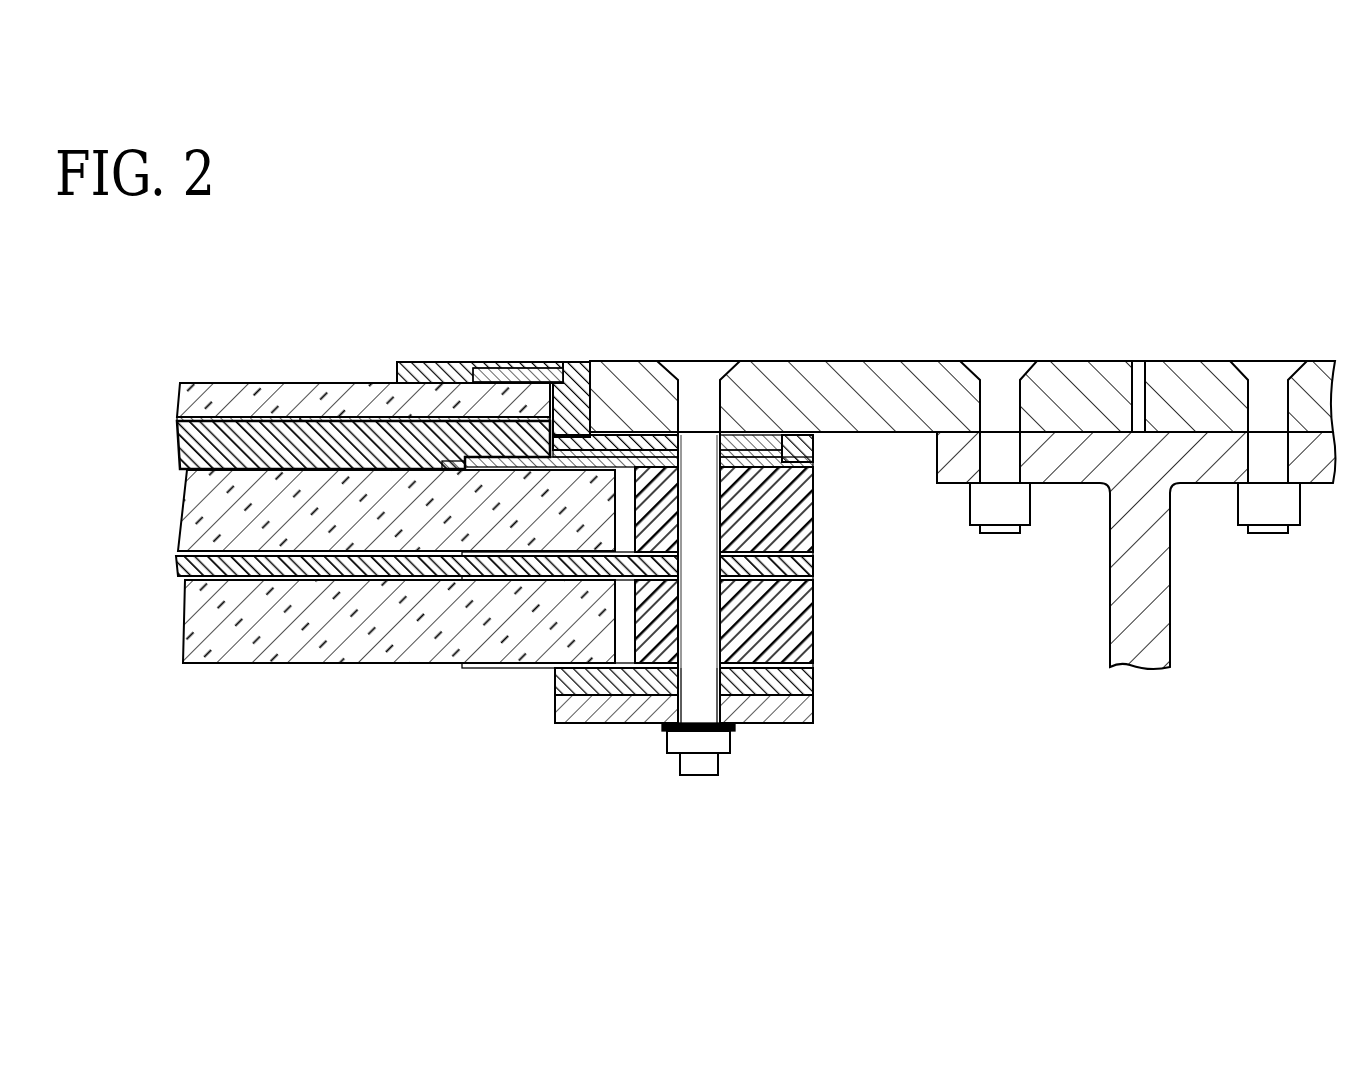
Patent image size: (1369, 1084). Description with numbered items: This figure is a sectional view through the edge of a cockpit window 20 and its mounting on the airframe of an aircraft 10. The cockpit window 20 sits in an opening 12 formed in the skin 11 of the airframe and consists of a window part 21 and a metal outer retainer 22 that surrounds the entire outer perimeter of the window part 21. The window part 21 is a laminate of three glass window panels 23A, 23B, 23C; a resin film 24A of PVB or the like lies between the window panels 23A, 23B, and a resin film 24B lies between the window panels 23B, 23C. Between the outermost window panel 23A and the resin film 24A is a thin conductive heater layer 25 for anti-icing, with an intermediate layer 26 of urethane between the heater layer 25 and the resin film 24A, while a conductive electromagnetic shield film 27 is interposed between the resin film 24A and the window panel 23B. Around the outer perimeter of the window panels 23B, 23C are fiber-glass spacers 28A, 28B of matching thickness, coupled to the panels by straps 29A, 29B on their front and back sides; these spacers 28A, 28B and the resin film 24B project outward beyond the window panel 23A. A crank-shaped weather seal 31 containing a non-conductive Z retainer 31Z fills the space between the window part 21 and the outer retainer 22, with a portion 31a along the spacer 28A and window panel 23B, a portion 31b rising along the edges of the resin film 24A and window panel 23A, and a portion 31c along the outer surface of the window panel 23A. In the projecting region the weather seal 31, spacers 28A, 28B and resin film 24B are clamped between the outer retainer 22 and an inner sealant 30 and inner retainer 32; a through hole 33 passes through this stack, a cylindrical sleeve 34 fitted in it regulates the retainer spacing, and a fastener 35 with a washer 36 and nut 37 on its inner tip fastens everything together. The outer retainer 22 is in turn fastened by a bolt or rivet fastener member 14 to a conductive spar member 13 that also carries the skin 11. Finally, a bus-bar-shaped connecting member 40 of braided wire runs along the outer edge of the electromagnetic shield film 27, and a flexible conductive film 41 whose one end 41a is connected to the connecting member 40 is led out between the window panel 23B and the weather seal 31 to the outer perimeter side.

The aircraft 10 is at (969, 300).
The skin 11 is at (1205, 360).
The opening 12 is at (1135, 390).
The spar member 13 is at (1110, 620).
The fastener member 14 is at (1000, 535).
The cockpit window 20 is at (478, 302).
The window part 21 is at (323, 385).
The outer retainer 22 is at (773, 368).
The window panel 23A is at (208, 383).
The window panel 23B is at (187, 510).
The window panel 23C is at (185, 620).
The resin film 24A is at (180, 447).
The resin film 24B is at (178, 567).
The heater layer 25 is at (280, 412).
The intermediate layer 26 is at (178, 419).
The electromagnetic shield film 27 is at (305, 469).
The spacer 28A is at (813, 495).
The spacer 28B is at (813, 620).
The strap 29A is at (813, 470).
The strap 29B is at (813, 578).
The sealant 30 is at (813, 690).
The weather seal 31 is at (565, 362).
The portion along the spacer and window panel 31a is at (760, 435).
The rising portion 31b is at (590, 390).
The portion along the window panel surface 31c is at (430, 362).
The Z retainer 31Z is at (500, 362).
The inner retainer 32 is at (813, 718).
The through hole 33 is at (697, 642).
The cylindrical sleeve 34 is at (697, 702).
The fastener 35 is at (690, 382).
The washer 36 is at (736, 727).
The nut 37 is at (731, 750).
The connecting member 40 is at (432, 450).
The conductive film 41 is at (494, 450).
The one end of the conductive film 41a is at (440, 416).